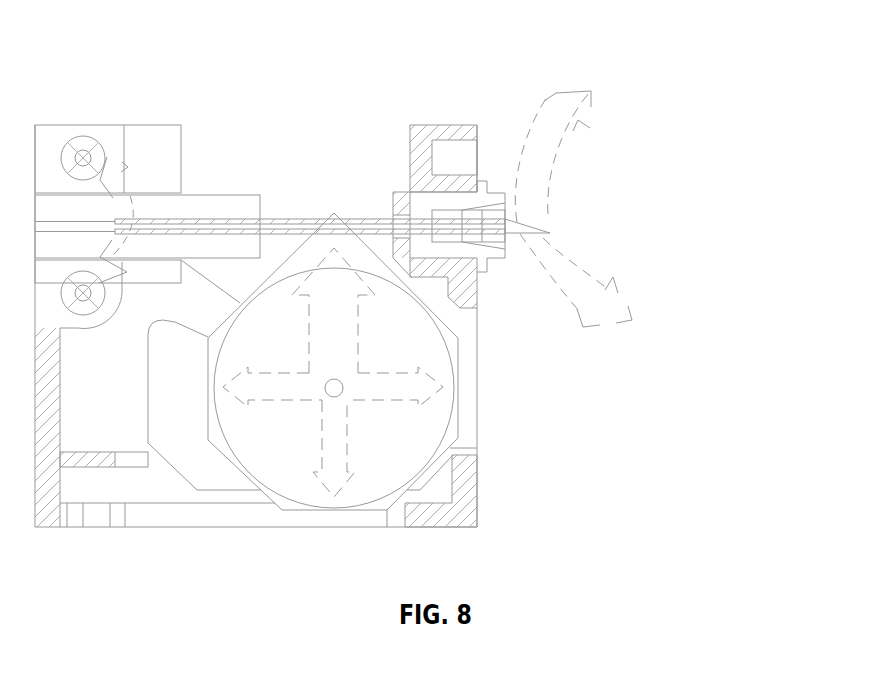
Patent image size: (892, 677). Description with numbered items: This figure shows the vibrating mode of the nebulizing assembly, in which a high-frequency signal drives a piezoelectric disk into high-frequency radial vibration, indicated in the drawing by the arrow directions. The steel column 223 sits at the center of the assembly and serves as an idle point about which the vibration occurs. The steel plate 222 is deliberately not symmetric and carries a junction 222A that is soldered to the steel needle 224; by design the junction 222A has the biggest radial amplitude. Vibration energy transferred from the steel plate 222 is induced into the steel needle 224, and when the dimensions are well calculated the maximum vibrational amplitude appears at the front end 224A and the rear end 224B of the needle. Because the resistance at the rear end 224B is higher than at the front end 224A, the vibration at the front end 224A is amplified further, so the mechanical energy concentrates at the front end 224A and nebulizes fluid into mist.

The steel plate 222 is at (450, 340).
The junction 222A is at (334, 213).
The steel column 223 is at (327, 393).
The steel needle 224 is at (391, 226).
The front end 224A is at (533, 227).
The rear end 224B is at (158, 223).